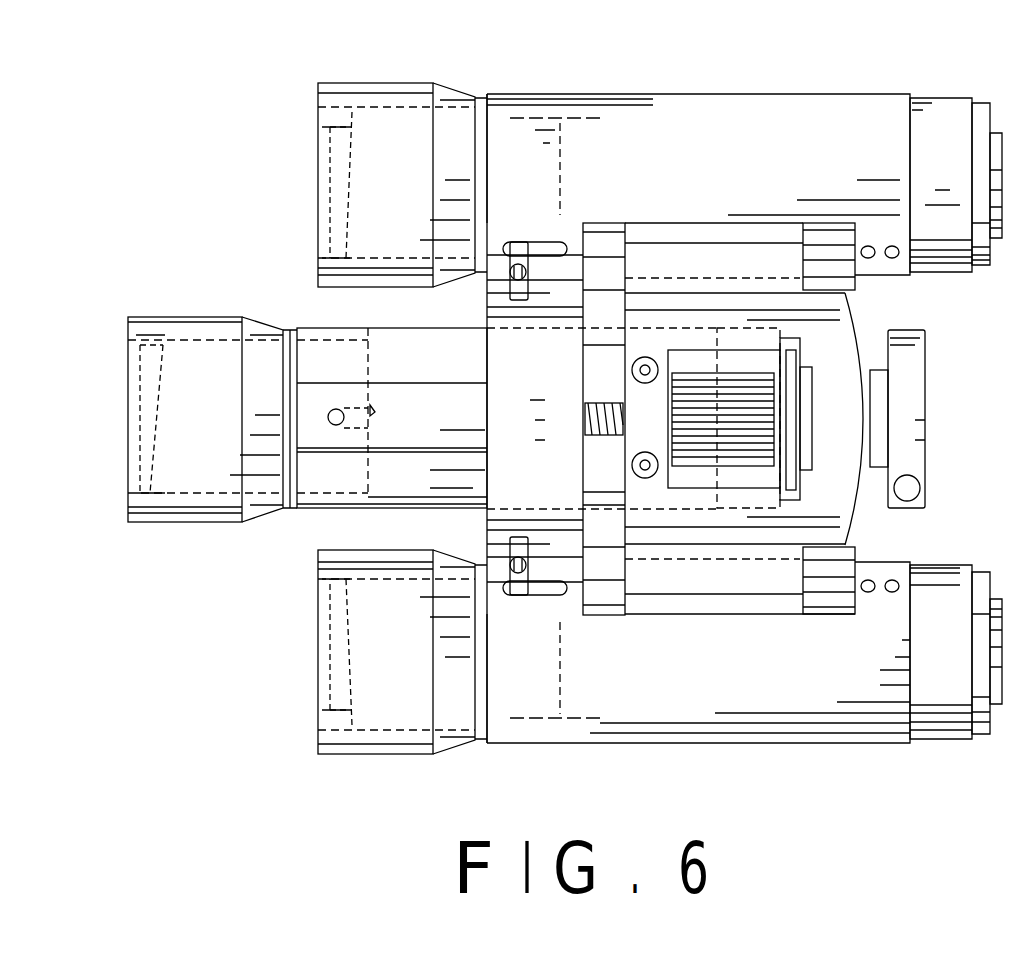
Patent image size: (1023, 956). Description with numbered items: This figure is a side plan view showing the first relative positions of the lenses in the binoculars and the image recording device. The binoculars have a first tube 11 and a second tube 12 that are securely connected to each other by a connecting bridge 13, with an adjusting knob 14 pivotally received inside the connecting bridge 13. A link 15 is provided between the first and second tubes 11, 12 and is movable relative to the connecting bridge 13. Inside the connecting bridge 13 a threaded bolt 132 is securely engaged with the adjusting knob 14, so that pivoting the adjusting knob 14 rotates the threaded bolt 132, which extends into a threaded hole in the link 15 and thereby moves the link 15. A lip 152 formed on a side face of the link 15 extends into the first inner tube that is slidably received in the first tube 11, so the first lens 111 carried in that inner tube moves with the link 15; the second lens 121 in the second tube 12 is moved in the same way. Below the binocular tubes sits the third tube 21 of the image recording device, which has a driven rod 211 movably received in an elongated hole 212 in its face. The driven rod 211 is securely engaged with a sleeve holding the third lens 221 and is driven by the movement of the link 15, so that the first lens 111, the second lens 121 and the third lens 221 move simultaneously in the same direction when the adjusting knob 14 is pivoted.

The first tube 11 is at (825, 744).
The second tube 12 is at (710, 96).
The connecting bridge 13 is at (848, 333).
The adjusting knob 14 is at (778, 467).
The link 15 is at (503, 490).
The third tube 21 is at (328, 507).
The first lens 111 is at (352, 720).
The second lens 121 is at (355, 128).
The threaded bolt 132 is at (602, 402).
The lip 152 is at (523, 587).
The driven rod 211 is at (333, 408).
The elongated hole 212 is at (373, 408).
The third lens 221 is at (167, 335).